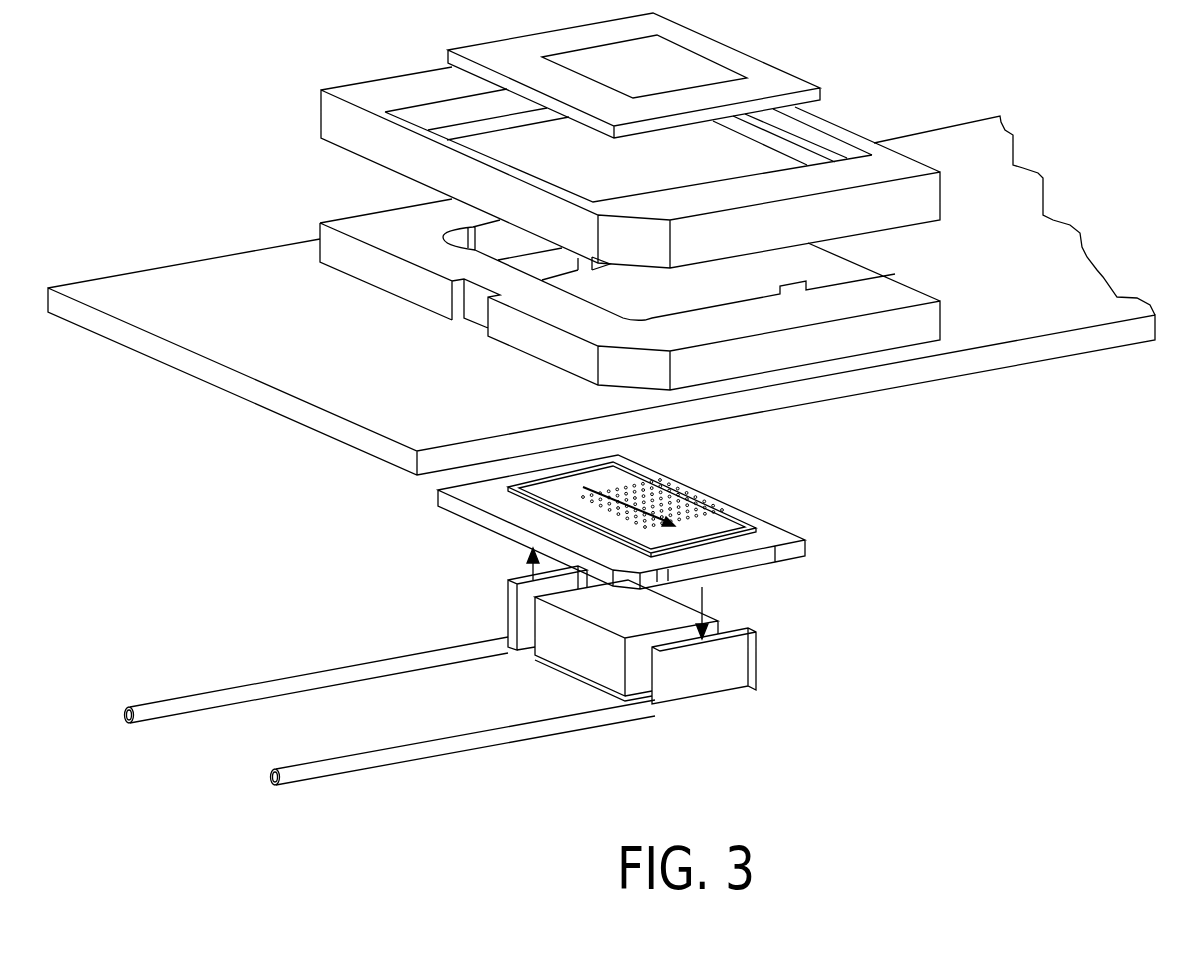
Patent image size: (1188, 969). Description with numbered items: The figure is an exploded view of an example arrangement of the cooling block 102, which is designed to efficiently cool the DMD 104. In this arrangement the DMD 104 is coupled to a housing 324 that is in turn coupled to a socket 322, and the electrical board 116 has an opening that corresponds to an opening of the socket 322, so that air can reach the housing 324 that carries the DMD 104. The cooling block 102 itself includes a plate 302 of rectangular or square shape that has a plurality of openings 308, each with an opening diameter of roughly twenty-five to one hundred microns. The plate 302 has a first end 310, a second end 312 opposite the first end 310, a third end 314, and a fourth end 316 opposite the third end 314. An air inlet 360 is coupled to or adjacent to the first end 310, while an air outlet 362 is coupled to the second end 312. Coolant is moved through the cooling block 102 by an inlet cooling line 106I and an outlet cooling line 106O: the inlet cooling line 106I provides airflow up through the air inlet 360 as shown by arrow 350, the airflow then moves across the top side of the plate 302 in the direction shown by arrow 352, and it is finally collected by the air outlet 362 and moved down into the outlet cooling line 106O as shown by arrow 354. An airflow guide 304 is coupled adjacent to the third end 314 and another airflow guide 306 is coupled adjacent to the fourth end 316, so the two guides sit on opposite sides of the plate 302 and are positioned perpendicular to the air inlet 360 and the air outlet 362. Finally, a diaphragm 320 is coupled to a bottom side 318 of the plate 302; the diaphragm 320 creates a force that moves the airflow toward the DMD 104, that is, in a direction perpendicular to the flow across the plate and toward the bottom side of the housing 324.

The cooling block 102 is at (818, 748).
The DMD 104 is at (822, 94).
The inlet cooling line 106I is at (342, 668).
The outlet cooling line 106O is at (398, 748).
The electrical board 116 is at (269, 266).
The plate 302 is at (806, 548).
The airflow guide 304 is at (607, 493).
The airflow guide 306 is at (667, 493).
The openings 308 is at (440, 506).
The first end 310 is at (490, 468).
The second end 312 is at (760, 563).
The third end 314 is at (475, 525).
The fourth end 316 is at (740, 505).
The bottom side 318 is at (738, 568).
The diaphragm 320 is at (573, 640).
The socket 322 is at (803, 312).
The housing 324 is at (893, 170).
The arrow 350 is at (510, 572).
The arrow 352 is at (600, 490).
The arrow 354 is at (750, 632).
The air inlet 360 is at (545, 476).
The air outlet 362 is at (770, 527).